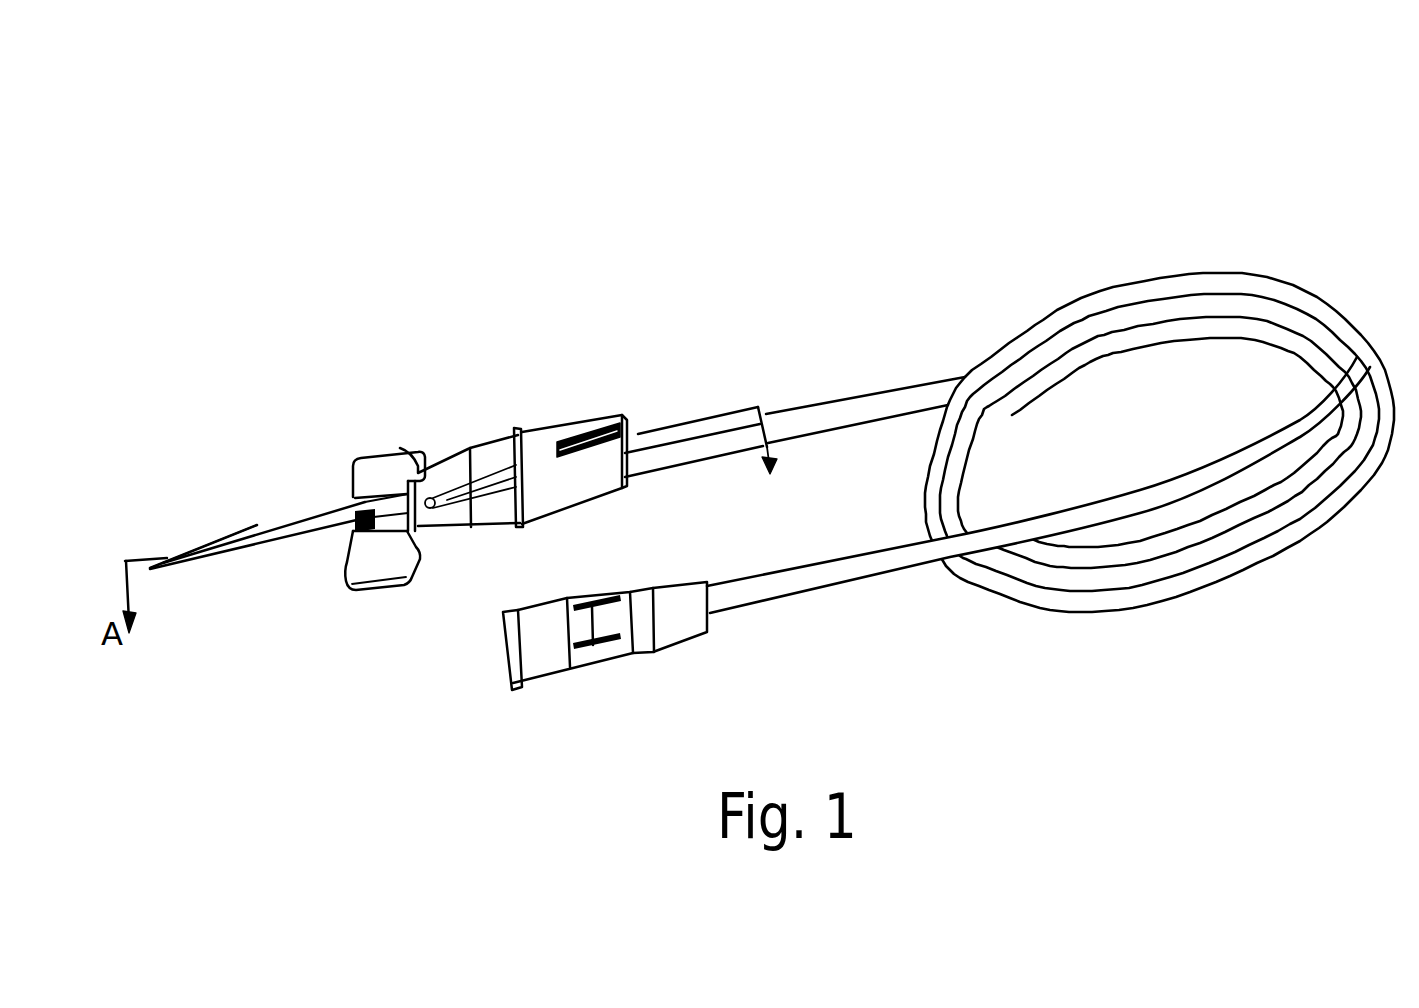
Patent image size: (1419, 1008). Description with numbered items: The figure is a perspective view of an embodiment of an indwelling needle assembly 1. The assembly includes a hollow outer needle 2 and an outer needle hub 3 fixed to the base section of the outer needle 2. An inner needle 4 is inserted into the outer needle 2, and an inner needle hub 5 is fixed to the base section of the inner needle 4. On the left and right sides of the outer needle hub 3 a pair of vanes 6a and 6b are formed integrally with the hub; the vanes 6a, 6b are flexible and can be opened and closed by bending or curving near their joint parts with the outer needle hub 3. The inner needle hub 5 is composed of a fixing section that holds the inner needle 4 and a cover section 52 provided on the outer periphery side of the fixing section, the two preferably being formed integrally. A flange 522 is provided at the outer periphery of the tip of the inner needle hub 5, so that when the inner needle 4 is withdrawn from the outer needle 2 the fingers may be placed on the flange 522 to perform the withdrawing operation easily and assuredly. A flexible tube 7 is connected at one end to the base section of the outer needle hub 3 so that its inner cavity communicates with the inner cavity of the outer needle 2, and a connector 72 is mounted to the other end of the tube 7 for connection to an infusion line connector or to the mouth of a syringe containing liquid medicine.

The indwelling needle assembly 1 is at (909, 231).
The hollow outer needle 2 is at (288, 526).
The outer needle hub 3 is at (480, 456).
The inner needle 4 is at (243, 553).
The inner needle hub 5 is at (581, 424).
The cover section 52 is at (600, 437).
The flange 522 is at (517, 433).
The vane 6a is at (368, 563).
The vane 6b is at (377, 467).
The tube 7 is at (860, 413).
The connector 72 is at (548, 650).